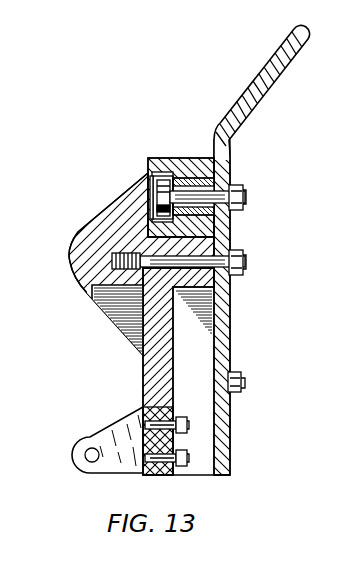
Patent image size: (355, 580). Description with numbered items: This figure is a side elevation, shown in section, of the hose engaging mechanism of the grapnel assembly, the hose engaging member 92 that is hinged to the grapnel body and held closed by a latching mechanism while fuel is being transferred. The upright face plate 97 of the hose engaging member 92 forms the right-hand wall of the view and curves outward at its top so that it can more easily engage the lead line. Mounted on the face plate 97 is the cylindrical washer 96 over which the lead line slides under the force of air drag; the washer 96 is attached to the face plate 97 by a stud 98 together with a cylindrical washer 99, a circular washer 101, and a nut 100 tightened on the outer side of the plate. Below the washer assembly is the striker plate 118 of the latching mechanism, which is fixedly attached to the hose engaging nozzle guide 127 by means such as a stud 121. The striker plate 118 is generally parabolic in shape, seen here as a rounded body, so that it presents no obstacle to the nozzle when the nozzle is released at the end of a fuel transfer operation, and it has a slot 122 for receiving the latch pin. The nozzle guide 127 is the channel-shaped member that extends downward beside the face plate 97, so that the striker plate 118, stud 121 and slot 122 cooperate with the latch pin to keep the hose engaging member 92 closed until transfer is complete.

The hose engaging member 92 is at (233, 333).
The cylindrical washer 96 is at (168, 159).
The face plate 97 is at (254, 112).
The stud 98 is at (155, 198).
The cylindrical washer 99 is at (147, 172).
The nut 100 is at (247, 193).
The circular washer 101 is at (202, 158).
The striker plate 118 is at (75, 232).
The stud 121 is at (247, 260).
The slot 122 is at (104, 309).
The hose engaging nozzle guide 127 is at (141, 381).